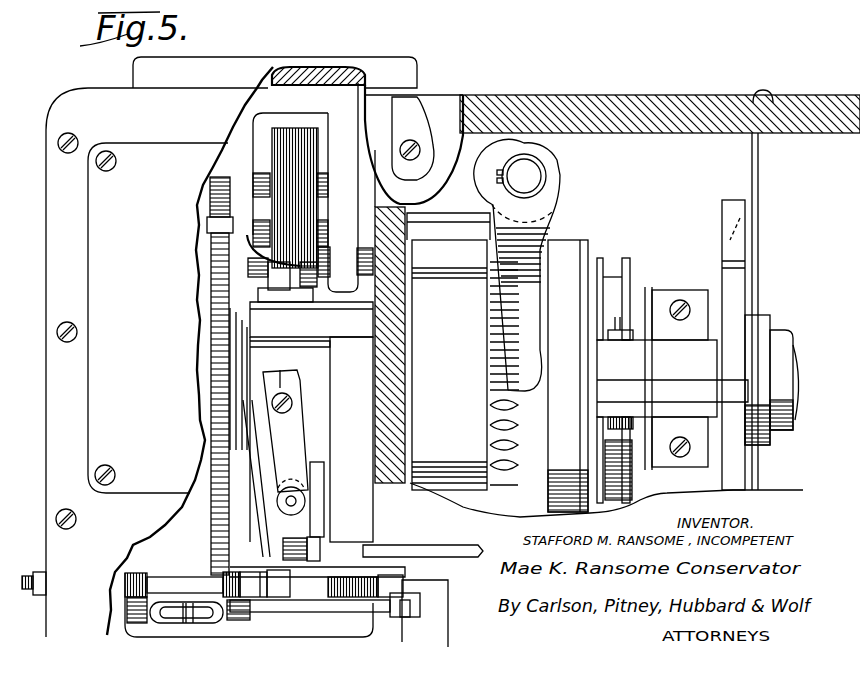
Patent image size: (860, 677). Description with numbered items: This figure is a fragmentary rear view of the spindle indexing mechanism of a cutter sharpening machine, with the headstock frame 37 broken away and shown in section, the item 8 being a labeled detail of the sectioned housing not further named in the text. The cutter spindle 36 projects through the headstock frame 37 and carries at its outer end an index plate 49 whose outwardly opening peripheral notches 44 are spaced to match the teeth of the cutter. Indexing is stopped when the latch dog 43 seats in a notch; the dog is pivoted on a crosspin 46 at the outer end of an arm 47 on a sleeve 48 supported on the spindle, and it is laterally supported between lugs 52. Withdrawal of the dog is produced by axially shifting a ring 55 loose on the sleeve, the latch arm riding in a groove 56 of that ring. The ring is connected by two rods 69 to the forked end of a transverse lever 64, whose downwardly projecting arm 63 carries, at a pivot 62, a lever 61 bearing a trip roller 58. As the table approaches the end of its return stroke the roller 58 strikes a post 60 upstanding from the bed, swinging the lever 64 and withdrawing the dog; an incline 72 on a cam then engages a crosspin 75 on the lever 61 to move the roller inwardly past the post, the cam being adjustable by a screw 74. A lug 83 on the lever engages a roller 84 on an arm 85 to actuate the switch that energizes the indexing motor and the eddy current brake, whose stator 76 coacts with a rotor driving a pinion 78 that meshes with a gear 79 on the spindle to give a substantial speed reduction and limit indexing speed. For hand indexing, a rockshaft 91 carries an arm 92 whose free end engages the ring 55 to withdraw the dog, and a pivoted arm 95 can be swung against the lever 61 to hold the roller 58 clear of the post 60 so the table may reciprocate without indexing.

The pole piece frame 8 is at (258, 153).
The spindle 36 is at (795, 360).
The headstock frame 37 is at (700, 102).
The latch dog 43 is at (673, 390).
The peripheral notches 44 is at (730, 262).
The crosspin 46 is at (615, 333).
The arm 47 is at (613, 358).
The sleeve 48 is at (520, 407).
The index plate 49 is at (735, 303).
The lugs 52 is at (702, 334).
The ring 55 is at (577, 248).
The groove 56 is at (604, 305).
The trip roller 58 is at (392, 625).
The post 60 is at (443, 607).
The lever 61 is at (362, 607).
The pivot 62 is at (320, 542).
The arm 63 is at (263, 521).
The lever 64 is at (318, 417).
The rods 69 is at (495, 268).
The incline 72 is at (222, 585).
The screw 74 is at (130, 618).
The crosspin 75 is at (253, 552).
The stator 76 is at (270, 130).
The pinion 78 is at (207, 230).
The gear 79 is at (218, 272).
The lug 83 is at (318, 490).
The roller 84 is at (280, 502).
The arm 85 is at (283, 452).
The rockshaft 91 is at (533, 176).
The arm 92 is at (515, 312).
The pivoted arm 95 is at (467, 557).